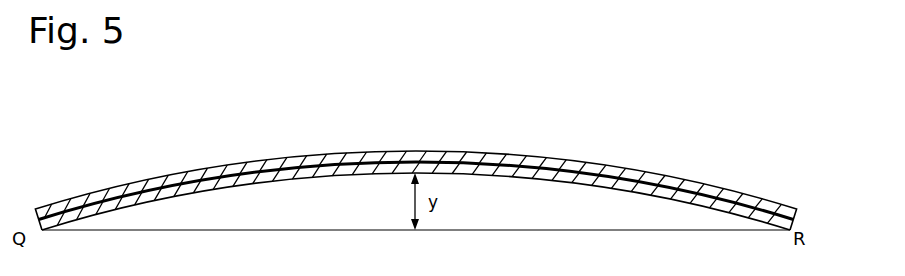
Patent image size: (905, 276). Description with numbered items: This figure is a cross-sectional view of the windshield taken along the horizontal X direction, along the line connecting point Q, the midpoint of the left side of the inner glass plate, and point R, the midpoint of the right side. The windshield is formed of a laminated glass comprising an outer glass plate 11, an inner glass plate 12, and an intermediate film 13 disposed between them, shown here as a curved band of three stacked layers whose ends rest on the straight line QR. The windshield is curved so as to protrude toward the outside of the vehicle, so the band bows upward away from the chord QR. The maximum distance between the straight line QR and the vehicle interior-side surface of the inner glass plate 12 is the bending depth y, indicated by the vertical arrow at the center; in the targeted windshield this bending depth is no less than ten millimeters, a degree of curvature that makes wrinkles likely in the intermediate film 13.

The outer glass plate 11 is at (216, 166).
The inner glass plate 12 is at (158, 202).
The intermediate film 13 is at (340, 153).